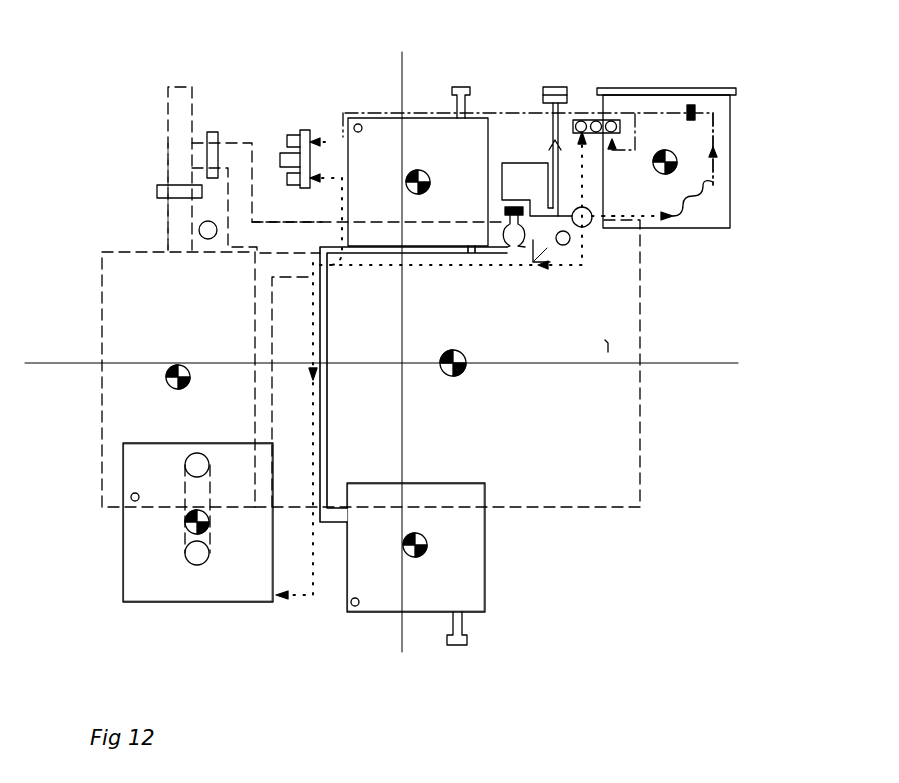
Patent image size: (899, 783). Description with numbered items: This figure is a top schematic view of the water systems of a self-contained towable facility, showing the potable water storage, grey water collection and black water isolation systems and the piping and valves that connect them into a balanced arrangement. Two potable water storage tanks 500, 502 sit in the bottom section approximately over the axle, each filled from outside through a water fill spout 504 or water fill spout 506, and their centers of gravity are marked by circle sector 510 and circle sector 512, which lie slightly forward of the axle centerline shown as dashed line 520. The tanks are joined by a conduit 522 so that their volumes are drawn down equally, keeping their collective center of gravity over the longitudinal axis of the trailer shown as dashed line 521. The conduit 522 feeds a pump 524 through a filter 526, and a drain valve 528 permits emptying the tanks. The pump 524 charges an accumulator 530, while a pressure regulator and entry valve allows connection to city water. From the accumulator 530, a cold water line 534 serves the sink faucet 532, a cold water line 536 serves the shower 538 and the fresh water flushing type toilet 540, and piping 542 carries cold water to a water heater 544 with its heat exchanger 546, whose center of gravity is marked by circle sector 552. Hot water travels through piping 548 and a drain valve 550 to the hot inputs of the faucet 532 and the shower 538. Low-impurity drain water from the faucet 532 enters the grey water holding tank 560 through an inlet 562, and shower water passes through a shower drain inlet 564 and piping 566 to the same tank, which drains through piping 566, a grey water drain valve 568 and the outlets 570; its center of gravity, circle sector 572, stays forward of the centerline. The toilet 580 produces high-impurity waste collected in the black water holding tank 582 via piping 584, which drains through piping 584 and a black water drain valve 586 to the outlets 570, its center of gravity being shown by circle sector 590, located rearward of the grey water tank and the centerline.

The potable water storage tank 500 is at (477, 132).
The potable water storage tank 502 is at (437, 590).
The water fill spout 504 is at (463, 86).
The water fill spout 506 is at (468, 640).
The circle sector 510 is at (420, 172).
The circle sector 512 is at (428, 540).
The dashed line 520 is at (400, 592).
The dashed line 521 is at (680, 363).
The conduit 522 is at (325, 523).
The pump 524 is at (518, 170).
The filter 526 is at (533, 243).
The drain valve 528 is at (523, 212).
The accumulator 530 is at (590, 224).
The faucet 532 is at (587, 85).
The cold water line 534 is at (585, 170).
The cold water line 536 is at (547, 263).
The shower 538 is at (304, 130).
The fresh water flushing type toilet 540 is at (256, 605).
The piping 542 is at (624, 212).
The water heater 544 is at (730, 215).
The heat exchanger 546 is at (712, 192).
The piping 548 is at (713, 115).
The drain valve 550 is at (692, 105).
The circle sector 552 is at (677, 153).
The grey water holding tank 560 is at (608, 348).
The inlet 562 is at (568, 243).
The shower drain inlet 564 is at (207, 232).
The piping 566 is at (234, 143).
The grey water drain valve 568 is at (212, 132).
The outlets 570 is at (176, 85).
The circle sector 572 is at (463, 368).
The toilet 580 is at (192, 592).
The black water holding tank 582 is at (103, 487).
The piping 584 is at (168, 220).
The black water drain valve 586 is at (157, 190).
The circle sector 590 is at (170, 379).